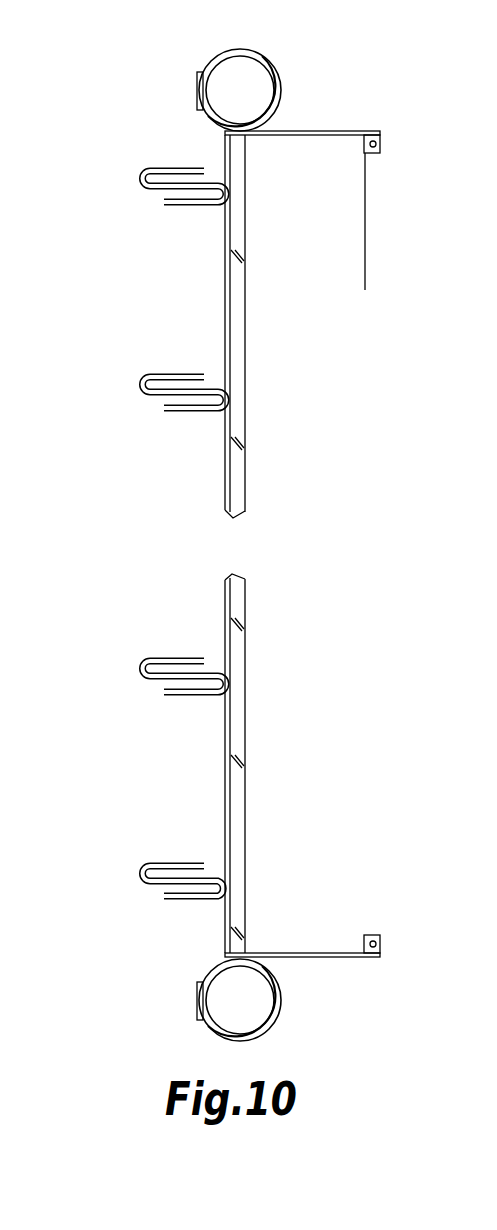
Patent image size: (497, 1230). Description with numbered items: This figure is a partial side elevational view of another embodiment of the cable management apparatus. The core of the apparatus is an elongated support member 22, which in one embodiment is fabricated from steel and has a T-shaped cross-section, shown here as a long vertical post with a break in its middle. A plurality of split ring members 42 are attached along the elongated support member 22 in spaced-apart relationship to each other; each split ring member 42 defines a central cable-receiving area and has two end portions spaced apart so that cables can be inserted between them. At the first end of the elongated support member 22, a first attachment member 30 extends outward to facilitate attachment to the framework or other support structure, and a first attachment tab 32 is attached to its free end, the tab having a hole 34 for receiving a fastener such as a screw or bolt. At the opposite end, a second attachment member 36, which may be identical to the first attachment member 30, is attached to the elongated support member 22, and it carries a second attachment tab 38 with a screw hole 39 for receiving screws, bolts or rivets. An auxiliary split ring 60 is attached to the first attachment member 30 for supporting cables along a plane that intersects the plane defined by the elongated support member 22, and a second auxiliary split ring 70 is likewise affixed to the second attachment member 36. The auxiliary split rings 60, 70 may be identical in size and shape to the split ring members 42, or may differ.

The elongated support member 22 is at (246, 653).
The first attachment member 30 is at (325, 131).
The first attachment tab 32 is at (364, 140).
The hole 34 is at (373, 148).
The second attachment member 36 is at (272, 953).
The second attachment tab 38 is at (375, 936).
The screw hole 39 is at (378, 944).
The split ring member 42 is at (140, 178).
The auxiliary split ring 60 is at (270, 48).
The second auxiliary split ring 70 is at (282, 1030).